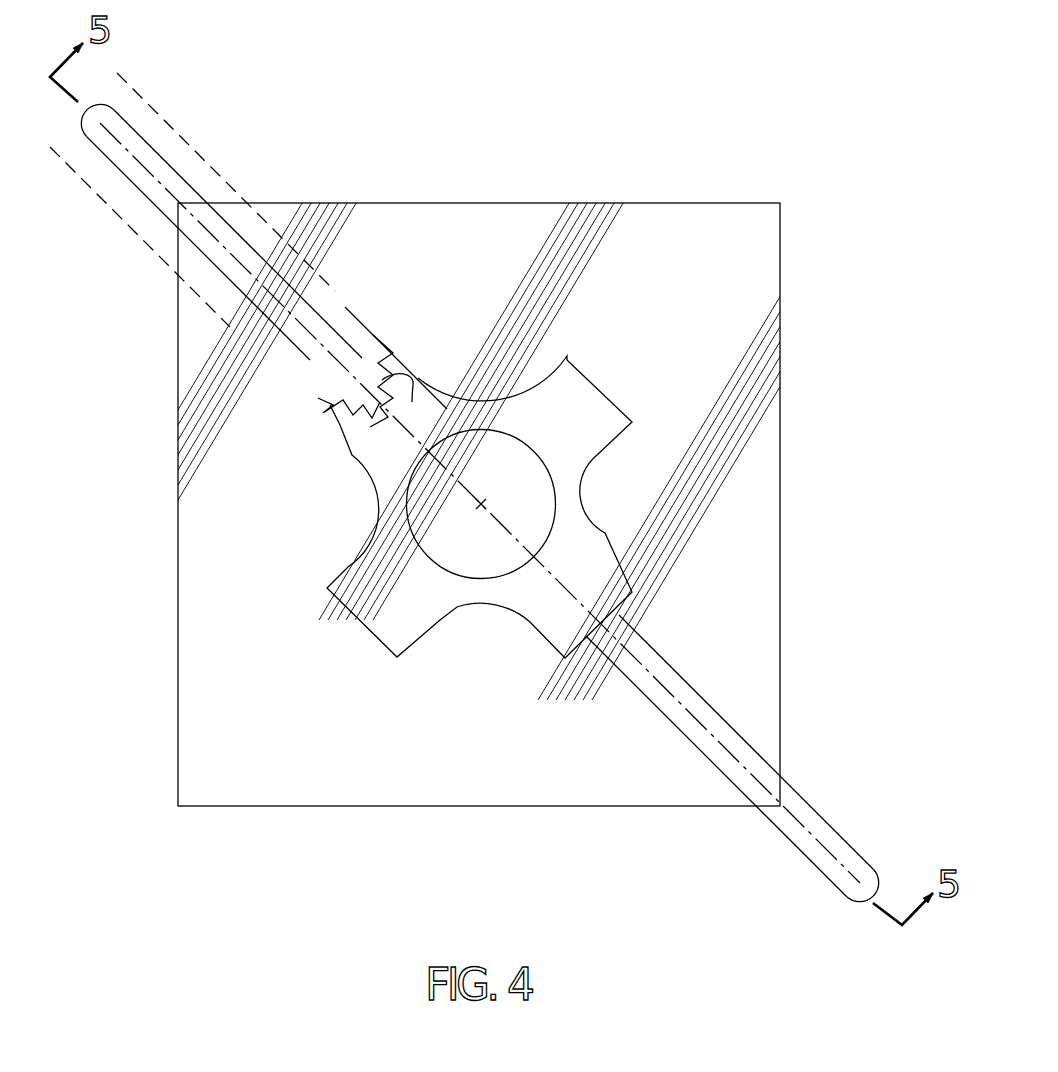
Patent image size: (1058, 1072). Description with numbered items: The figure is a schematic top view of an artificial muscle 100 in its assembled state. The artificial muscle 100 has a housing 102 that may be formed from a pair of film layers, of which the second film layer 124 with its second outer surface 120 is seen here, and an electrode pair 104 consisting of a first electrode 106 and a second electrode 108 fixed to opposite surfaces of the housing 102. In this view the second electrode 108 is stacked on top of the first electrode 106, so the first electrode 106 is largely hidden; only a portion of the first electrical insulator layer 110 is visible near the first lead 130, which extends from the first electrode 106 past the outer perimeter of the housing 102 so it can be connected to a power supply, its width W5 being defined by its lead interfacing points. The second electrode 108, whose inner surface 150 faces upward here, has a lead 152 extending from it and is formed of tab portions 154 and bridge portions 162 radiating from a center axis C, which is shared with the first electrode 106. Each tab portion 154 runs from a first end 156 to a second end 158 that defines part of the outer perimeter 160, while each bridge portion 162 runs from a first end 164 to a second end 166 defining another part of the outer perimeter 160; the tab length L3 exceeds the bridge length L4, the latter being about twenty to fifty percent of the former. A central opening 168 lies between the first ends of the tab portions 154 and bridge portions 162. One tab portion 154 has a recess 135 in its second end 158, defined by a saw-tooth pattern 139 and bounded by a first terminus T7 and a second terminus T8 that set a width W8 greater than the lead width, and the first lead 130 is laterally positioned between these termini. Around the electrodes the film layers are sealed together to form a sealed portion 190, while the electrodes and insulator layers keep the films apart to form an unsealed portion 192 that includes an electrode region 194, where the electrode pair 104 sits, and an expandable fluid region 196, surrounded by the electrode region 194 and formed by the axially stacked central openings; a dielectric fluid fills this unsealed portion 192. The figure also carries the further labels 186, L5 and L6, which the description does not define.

The artificial muscle 100 is at (470, 105).
The housing 102 is at (143, 407).
The electrode pair 104 is at (417, 353).
The first electrode 106 is at (378, 342).
The second electrode 108 is at (345, 487).
The first electrical insulator layer 110 is at (310, 392).
The second outer surface 120 is at (653, 214).
The second film layer 124 is at (825, 510).
The first lead 130 is at (122, 126).
The recess 135 is at (335, 412).
The saw-tooth pattern 139 is at (411, 398).
The inner surface 150 is at (568, 362).
The lead 152 is at (825, 832).
The tab portion 154 is at (577, 667).
The first end 156 is at (540, 542).
The second end 158 is at (622, 597).
The outer perimeter 160 is at (617, 403).
The bridge portion 162 is at (507, 620).
The first end 164 is at (478, 580).
The second end 166 is at (470, 607).
The central opening 168 is at (462, 420).
The tooth face 186 is at (312, 404).
The sealed portion 190 is at (767, 438).
The unsealed portion 192 is at (560, 463).
The electrode region 194 is at (385, 467).
The expandable fluid region 196 is at (457, 605).
The center axis C is at (481, 503).
The tab length L3 is at (572, 636).
The bridge length L4 is at (481, 604).
The length L5 is at (328, 383).
The length L6 is at (372, 336).
The first terminus T7 is at (397, 335).
The second terminus T8 is at (312, 405).
The width of the lead W5 is at (143, 230).
The width of the recess W8 is at (46, 144).